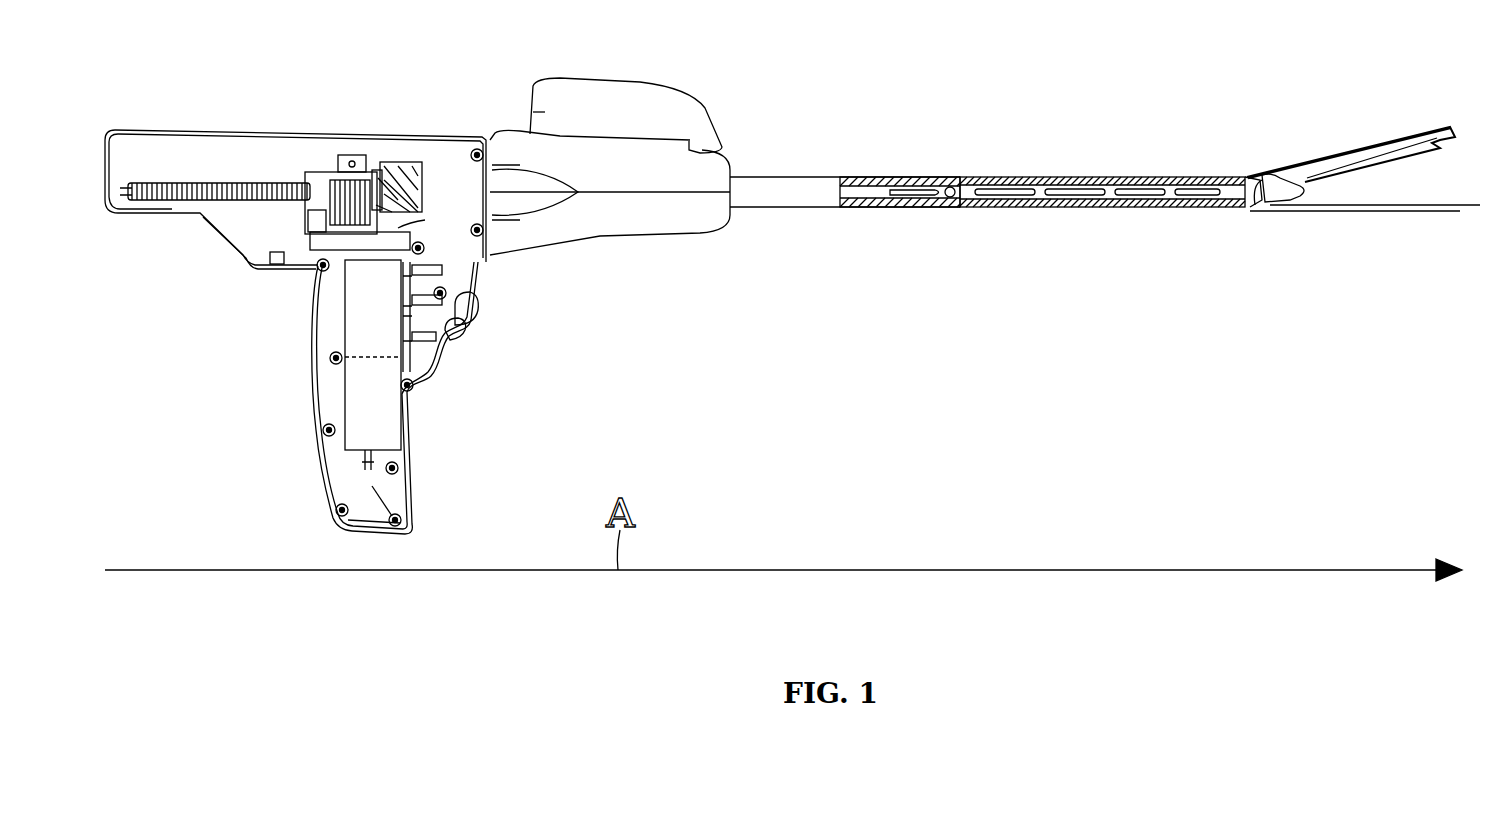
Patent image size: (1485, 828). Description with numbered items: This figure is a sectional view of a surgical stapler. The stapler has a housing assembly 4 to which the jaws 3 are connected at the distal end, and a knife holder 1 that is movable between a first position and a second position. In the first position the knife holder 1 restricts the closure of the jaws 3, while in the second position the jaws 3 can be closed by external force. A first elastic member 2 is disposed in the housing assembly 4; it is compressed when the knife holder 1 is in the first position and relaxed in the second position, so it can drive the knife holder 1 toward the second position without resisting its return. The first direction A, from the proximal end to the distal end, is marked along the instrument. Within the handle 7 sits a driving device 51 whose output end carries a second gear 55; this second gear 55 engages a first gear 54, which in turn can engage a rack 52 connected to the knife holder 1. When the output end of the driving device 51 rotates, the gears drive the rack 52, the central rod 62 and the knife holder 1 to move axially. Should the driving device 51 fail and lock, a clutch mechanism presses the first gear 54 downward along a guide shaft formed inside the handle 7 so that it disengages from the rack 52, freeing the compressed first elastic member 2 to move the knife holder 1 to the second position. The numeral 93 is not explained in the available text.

The knife holder 1 is at (1050, 190).
The first elastic member 2 is at (938, 186).
The jaws 3 is at (1318, 168).
The housing assembly 4 is at (790, 205).
The handle 7 is at (318, 428).
The driving device 51 is at (388, 410).
The rack 52 is at (166, 184).
The first gear 54 is at (336, 228).
The second gear 55 is at (402, 240).
The central rod 62 is at (913, 186).
The drive mechanism 93 is at (316, 182).